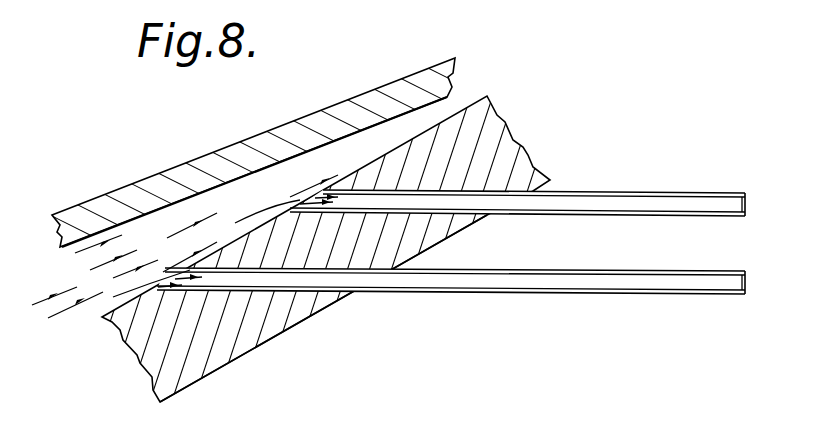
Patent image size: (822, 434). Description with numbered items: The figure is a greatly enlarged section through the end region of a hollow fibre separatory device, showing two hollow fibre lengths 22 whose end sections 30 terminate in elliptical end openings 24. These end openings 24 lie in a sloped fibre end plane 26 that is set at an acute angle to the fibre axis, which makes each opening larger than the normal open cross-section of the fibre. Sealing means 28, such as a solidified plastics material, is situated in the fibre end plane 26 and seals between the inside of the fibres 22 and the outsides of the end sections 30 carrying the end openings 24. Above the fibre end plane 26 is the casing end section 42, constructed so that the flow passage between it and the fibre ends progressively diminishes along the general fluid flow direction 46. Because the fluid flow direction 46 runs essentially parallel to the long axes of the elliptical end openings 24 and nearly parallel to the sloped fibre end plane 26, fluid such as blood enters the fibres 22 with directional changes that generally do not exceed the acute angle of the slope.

The hollow fibre lengths 22 is at (595, 208).
The end openings 24 is at (305, 180).
The fibre end plane 26 is at (228, 235).
The sealing means 28 is at (238, 345).
The end sections 30 is at (330, 278).
The casing end section 42 is at (137, 232).
The fluid flow direction 46 is at (63, 312).